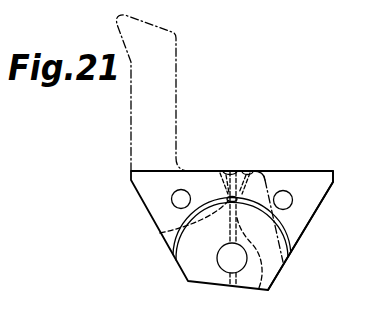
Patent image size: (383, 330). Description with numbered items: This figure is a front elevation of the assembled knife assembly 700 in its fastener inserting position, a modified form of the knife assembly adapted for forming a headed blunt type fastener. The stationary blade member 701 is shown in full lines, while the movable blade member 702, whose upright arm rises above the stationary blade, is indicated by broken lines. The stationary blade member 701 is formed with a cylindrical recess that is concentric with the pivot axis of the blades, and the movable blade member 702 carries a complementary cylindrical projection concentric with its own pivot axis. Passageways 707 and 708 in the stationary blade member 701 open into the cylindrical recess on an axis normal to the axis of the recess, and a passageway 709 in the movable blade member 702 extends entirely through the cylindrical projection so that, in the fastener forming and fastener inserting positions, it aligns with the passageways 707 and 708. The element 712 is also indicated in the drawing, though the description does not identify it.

The knife assembly 700 is at (184, 281).
The stationary blade member 701 is at (305, 207).
The movable blade member 702 is at (129, 152).
The passageway 707 is at (267, 172).
The passageway 708 is at (218, 171).
The passageway 709 is at (259, 291).
The link member 712 is at (160, 233).